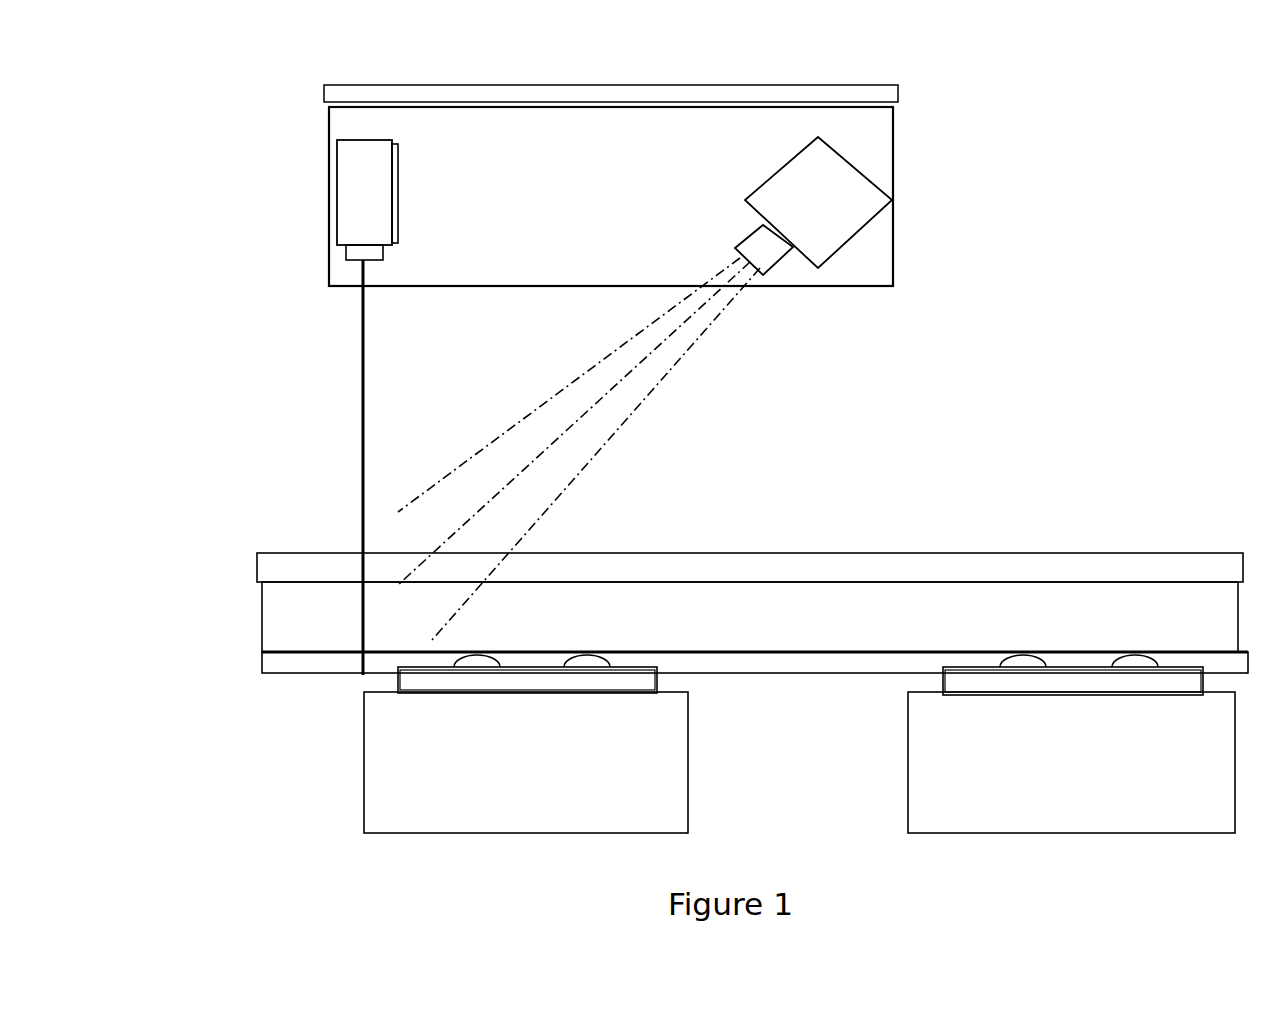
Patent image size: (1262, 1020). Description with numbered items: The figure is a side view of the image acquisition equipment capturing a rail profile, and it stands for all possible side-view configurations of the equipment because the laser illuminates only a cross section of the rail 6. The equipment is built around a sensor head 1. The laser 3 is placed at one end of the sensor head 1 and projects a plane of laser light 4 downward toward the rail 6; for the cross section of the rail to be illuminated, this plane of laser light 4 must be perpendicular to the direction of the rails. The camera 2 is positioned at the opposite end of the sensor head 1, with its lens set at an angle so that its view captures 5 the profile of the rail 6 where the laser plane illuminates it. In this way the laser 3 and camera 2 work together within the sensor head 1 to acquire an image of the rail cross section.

The sensor head 1 is at (530, 150).
The camera 2 is at (815, 173).
The laser 3 is at (368, 177).
The plane of laser light 4 is at (362, 435).
The capture of the rail profile 5 is at (620, 428).
The rail 6 is at (307, 602).